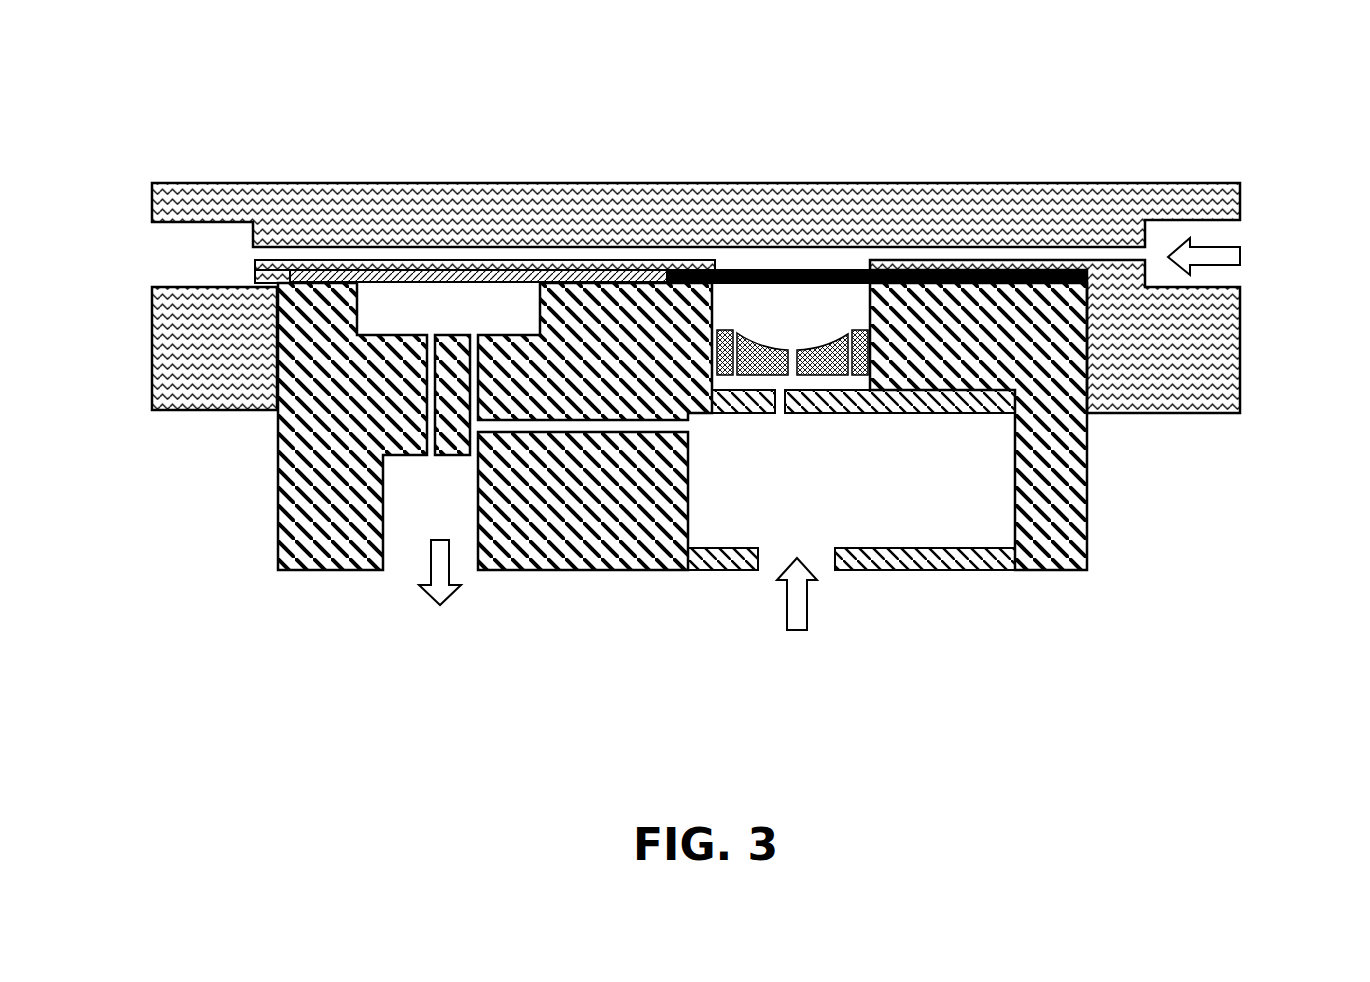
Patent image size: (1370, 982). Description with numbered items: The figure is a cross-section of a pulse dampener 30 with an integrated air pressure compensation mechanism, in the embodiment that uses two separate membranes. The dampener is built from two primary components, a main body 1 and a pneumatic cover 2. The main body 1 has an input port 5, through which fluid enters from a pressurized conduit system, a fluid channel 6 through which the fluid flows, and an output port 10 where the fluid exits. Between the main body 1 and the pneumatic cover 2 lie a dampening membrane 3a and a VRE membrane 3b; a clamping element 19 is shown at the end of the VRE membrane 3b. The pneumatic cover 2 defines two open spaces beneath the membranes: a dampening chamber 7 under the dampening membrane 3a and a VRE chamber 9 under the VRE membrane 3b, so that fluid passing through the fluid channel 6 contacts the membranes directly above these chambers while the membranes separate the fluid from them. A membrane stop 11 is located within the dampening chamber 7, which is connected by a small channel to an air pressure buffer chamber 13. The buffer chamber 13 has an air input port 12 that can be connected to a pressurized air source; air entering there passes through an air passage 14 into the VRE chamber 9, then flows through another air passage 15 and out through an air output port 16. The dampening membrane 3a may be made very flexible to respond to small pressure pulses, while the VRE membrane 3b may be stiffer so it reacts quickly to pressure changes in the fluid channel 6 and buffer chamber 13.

The main body 1 is at (1197, 382).
The pneumatic cover 2 is at (1063, 543).
The dampening membrane 3a is at (770, 268).
The VRE membrane 3b is at (457, 267).
The input port 5 is at (1214, 236).
The fluid channel 6 is at (997, 254).
The dampening chamber 7 is at (812, 330).
The VRE chamber 9 is at (537, 333).
The output port 10 is at (210, 250).
The membrane stop 11 is at (828, 365).
The air input port 12 is at (841, 584).
The air pressure buffer chamber 13 is at (976, 505).
The air passage 14 is at (626, 434).
The air passage 15 is at (425, 405).
The air output port 16 is at (452, 510).
The membrane clamp 19 is at (288, 277).
The pulse dampener 30 is at (693, 444).